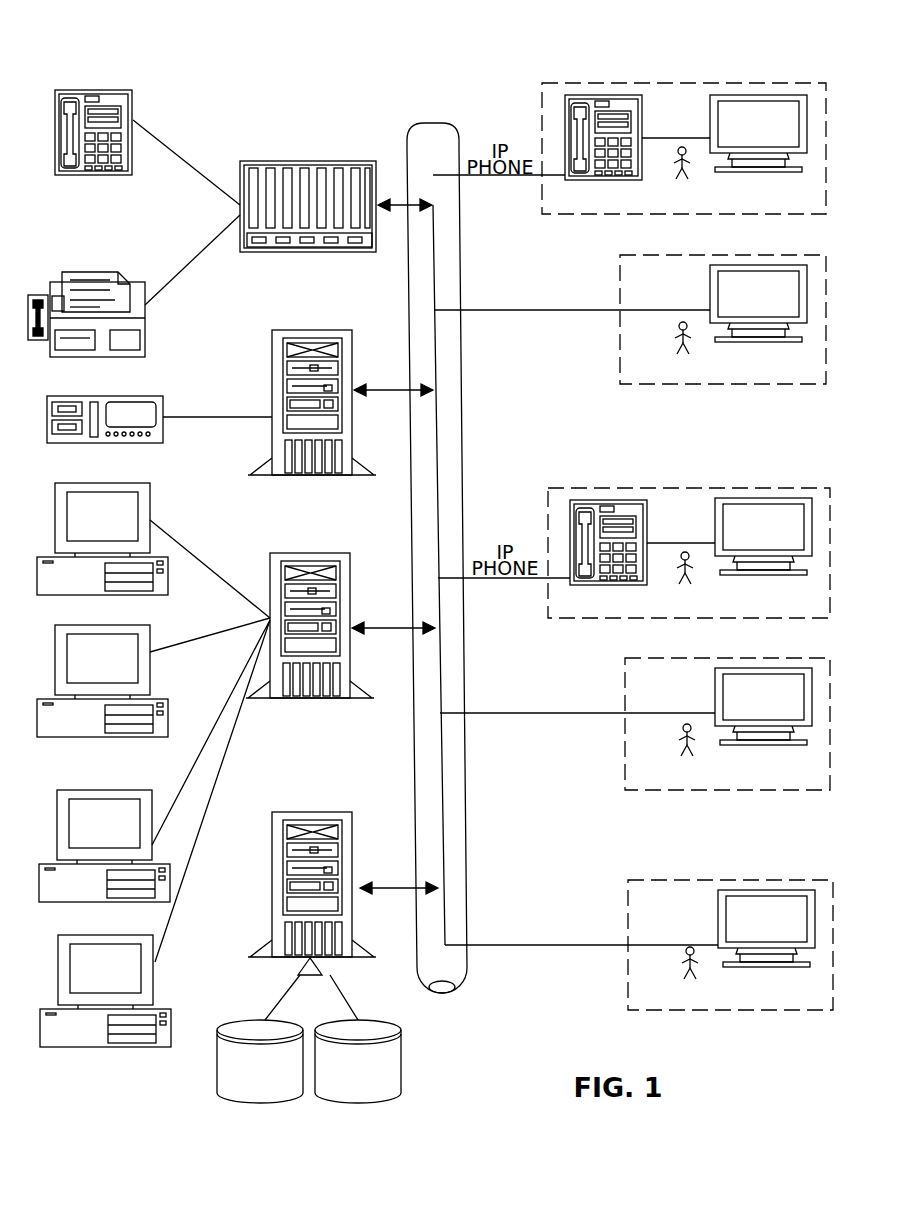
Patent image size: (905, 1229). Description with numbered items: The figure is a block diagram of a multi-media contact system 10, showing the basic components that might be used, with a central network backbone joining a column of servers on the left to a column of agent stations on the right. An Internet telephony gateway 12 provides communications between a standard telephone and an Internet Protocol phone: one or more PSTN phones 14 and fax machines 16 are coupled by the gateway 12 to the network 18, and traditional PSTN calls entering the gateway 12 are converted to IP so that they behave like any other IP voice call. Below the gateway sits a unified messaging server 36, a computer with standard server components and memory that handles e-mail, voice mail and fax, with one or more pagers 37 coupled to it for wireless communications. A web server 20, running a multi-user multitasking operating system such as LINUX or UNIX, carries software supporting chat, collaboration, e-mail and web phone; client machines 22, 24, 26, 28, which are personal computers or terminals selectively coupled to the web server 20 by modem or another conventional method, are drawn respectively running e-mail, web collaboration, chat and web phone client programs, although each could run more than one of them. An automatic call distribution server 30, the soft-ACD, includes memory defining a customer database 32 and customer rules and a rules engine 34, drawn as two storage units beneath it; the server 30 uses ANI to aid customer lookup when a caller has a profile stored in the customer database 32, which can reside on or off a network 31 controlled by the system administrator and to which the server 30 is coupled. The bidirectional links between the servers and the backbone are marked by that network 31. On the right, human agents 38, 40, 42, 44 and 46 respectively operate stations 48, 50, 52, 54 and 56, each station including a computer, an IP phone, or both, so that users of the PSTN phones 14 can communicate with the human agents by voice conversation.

The system 10 is at (145, 38).
The Internet telephony gateway 12 is at (290, 162).
The PSTN phone 14 is at (133, 103).
The fax machine 16 is at (95, 272).
The network 18 is at (418, 124).
The web server 20 is at (352, 573).
The client machine 22 is at (102, 549).
The client machine 24 is at (92, 701).
The client machine 26 is at (104, 856).
The client machine 28 is at (105, 1001).
The automatic call distribution server 30 is at (352, 835).
The network 31 is at (398, 389).
The customer database 32 is at (403, 1058).
The customer rules and rules engine 34 is at (240, 1021).
The unified messaging server 36 is at (272, 347).
The pager 37 is at (140, 396).
The human agent 38 is at (675, 170).
The human agent 40 is at (676, 344).
The human agent 42 is at (680, 575).
The human agent 44 is at (682, 746).
The human agent 46 is at (685, 969).
The station 48 is at (692, 82).
The station 50 is at (692, 254).
The station 52 is at (696, 486).
The station 54 is at (696, 657).
The station 56 is at (698, 878).